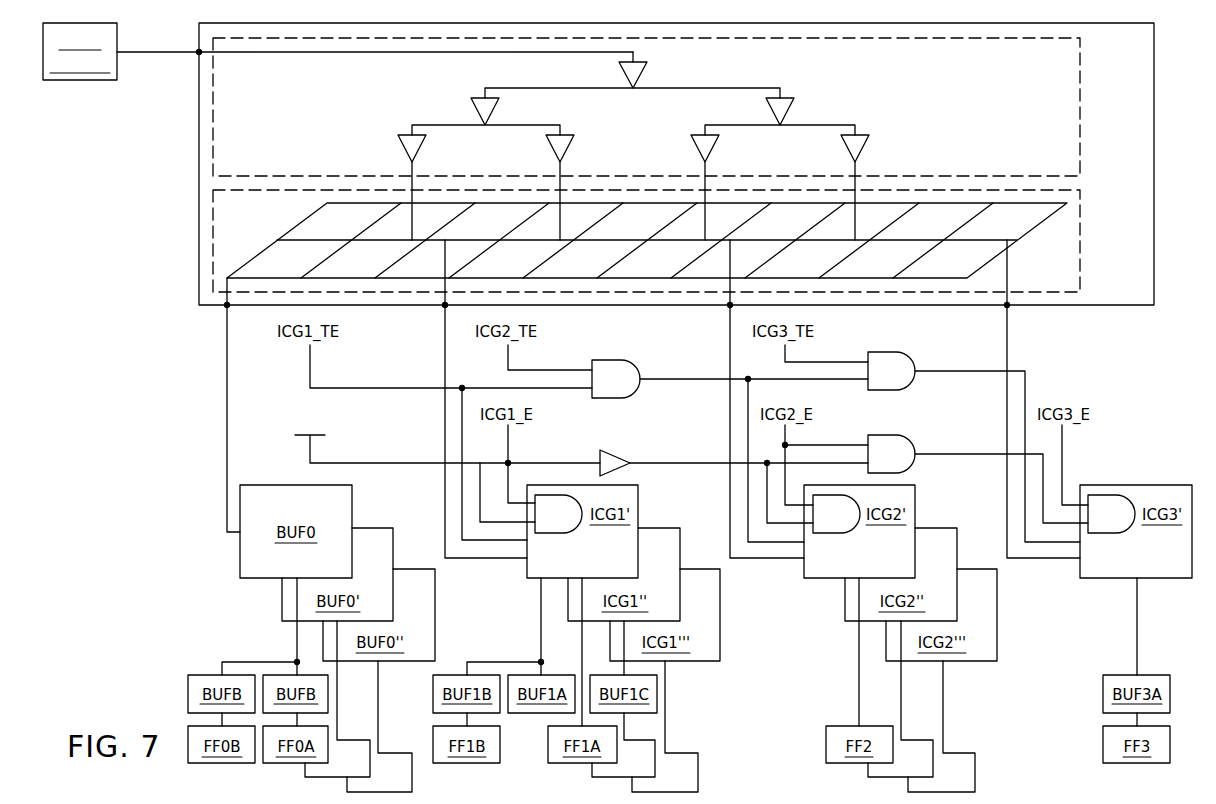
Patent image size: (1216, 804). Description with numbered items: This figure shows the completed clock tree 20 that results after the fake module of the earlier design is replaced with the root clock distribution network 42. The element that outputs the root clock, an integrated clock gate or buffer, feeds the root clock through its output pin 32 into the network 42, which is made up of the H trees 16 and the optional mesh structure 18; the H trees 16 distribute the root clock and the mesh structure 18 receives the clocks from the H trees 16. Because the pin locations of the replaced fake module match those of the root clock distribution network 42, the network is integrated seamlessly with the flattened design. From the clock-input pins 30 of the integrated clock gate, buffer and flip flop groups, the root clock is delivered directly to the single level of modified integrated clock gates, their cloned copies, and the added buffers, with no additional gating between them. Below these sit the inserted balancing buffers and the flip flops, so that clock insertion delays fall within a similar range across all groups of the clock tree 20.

The H trees 16 is at (1085, 84).
The mesh structure 18 is at (1085, 219).
The clock tree 20 is at (126, 250).
The clock-input pins 30 is at (223, 310).
The output pin 32 is at (197, 57).
The root clock distribution network 42 is at (1157, 139).